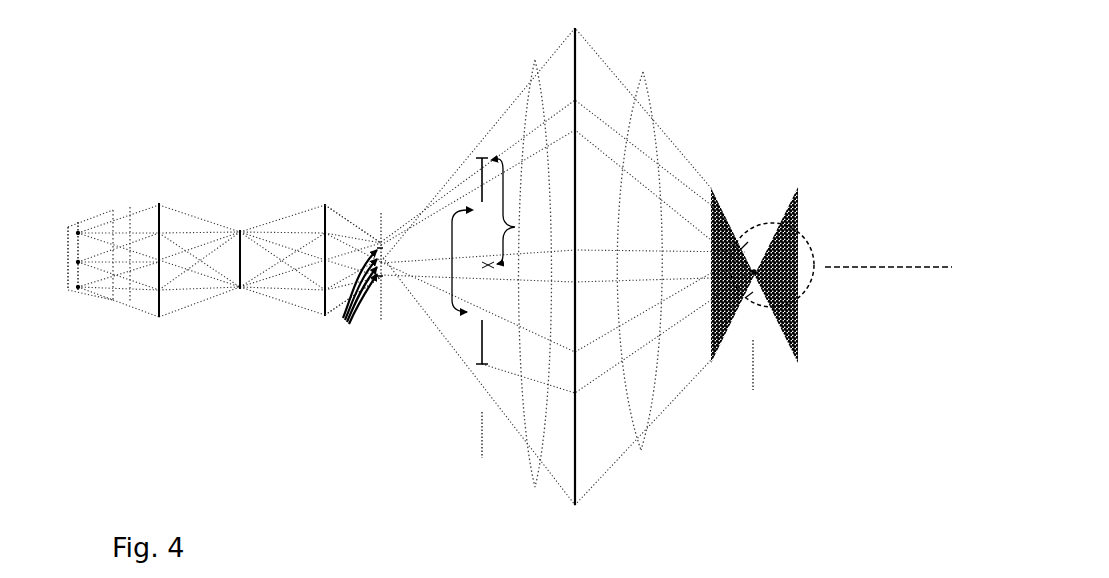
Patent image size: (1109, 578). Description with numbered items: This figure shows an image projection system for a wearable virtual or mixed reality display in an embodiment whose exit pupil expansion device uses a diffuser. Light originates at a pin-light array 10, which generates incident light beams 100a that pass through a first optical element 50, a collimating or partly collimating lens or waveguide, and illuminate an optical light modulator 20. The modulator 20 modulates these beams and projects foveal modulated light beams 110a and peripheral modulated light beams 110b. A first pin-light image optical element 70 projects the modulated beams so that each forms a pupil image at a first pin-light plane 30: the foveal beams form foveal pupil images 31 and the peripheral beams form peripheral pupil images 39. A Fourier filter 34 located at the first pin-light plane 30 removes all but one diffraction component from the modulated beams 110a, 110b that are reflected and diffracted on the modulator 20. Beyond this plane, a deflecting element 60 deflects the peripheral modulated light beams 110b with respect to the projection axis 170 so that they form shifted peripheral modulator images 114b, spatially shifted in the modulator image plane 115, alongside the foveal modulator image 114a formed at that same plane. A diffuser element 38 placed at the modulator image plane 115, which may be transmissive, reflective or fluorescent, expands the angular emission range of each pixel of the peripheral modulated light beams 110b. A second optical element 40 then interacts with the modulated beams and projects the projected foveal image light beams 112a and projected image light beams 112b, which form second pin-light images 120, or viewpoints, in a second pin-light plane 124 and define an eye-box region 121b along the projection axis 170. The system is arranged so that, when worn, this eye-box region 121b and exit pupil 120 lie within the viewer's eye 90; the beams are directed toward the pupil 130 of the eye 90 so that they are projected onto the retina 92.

The pin-light array 10 is at (75, 225).
The foveal incident light beams 100a is at (125, 203).
The first optical element 50 is at (161, 202).
The optical light modulator 20 is at (240, 230).
The first pin-light image optical element 70 is at (325, 203).
The foveal modulated light beams 110a is at (343, 205).
The peripheral modulated light beams 110b is at (353, 296).
The peripheral pupil images 39 is at (380, 240).
The first pin-light plane 30 is at (380, 318).
The foveal pupil images 31 is at (352, 295).
The Fourier filter 34 is at (379, 313).
The deflecting element 60 is at (385, 240).
The diffuser element 38 is at (477, 172).
The foveal modulator image 114a is at (453, 290).
The shifted peripheral modulator images 114b is at (516, 227).
The modulator image plane 115 is at (476, 458).
The second optical element 40 is at (577, 43).
The projected foveal image light beams 112a is at (643, 72).
The projected image light beams 112b is at (651, 261).
The eye-box region 121b is at (722, 203).
The retina 92 is at (808, 283).
The viewer's eye 90 is at (772, 269).
The pupil 130 is at (750, 246).
The second pin-light images 120 is at (753, 294).
The second pin-light plane 124 is at (754, 392).
The projection axis 170 is at (886, 269).